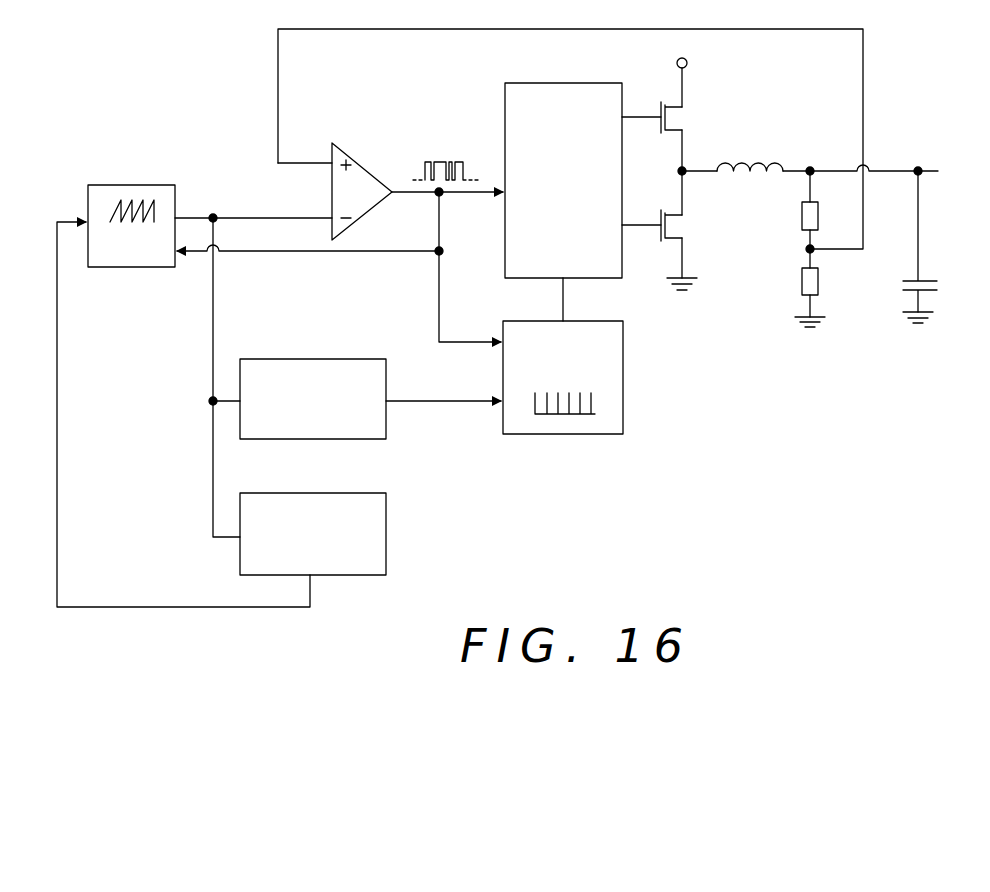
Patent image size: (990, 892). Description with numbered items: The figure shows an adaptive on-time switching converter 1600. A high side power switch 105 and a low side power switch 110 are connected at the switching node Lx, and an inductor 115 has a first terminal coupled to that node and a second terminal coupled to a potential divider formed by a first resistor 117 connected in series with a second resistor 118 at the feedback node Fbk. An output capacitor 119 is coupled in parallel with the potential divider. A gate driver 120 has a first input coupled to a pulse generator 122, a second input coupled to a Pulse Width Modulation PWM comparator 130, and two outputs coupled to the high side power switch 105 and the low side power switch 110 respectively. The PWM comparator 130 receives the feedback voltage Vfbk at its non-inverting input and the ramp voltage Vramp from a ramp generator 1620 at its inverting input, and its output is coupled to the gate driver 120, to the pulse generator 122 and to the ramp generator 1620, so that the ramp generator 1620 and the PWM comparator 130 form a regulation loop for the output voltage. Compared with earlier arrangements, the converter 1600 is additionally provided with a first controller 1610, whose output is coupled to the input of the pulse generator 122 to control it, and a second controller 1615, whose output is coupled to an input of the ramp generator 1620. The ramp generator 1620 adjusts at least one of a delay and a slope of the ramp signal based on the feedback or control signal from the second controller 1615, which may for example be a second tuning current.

The high side power switch 105 is at (685, 118).
The low side power switch 110 is at (685, 227).
The inductor 115 is at (746, 157).
The first resistor 117 is at (793, 226).
The second resistor 118 is at (792, 282).
The output capacitor 119 is at (898, 283).
The gate driver 120 is at (583, 180).
The pulse generator 122 is at (585, 321).
The Pulse Width Modulation PWM comparator 130 is at (357, 163).
The adaptive on-time switching converter 1600 is at (750, 489).
The first controller 1610 is at (327, 359).
The second controller 1615 is at (327, 493).
The ramp generator 1620 is at (147, 184).